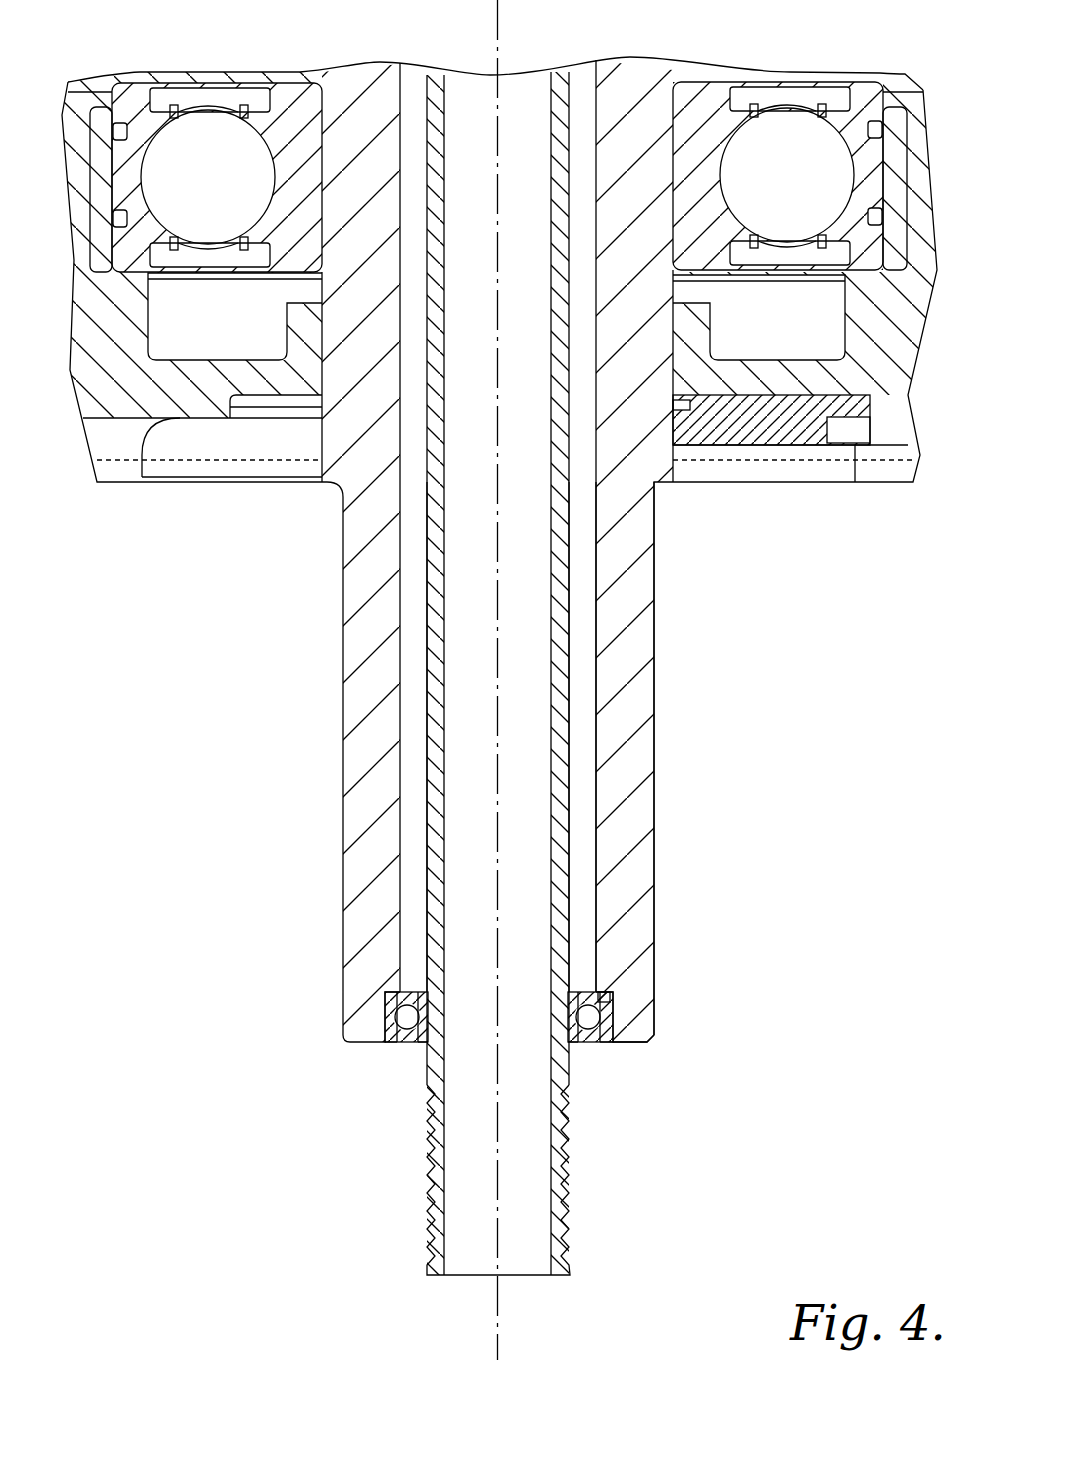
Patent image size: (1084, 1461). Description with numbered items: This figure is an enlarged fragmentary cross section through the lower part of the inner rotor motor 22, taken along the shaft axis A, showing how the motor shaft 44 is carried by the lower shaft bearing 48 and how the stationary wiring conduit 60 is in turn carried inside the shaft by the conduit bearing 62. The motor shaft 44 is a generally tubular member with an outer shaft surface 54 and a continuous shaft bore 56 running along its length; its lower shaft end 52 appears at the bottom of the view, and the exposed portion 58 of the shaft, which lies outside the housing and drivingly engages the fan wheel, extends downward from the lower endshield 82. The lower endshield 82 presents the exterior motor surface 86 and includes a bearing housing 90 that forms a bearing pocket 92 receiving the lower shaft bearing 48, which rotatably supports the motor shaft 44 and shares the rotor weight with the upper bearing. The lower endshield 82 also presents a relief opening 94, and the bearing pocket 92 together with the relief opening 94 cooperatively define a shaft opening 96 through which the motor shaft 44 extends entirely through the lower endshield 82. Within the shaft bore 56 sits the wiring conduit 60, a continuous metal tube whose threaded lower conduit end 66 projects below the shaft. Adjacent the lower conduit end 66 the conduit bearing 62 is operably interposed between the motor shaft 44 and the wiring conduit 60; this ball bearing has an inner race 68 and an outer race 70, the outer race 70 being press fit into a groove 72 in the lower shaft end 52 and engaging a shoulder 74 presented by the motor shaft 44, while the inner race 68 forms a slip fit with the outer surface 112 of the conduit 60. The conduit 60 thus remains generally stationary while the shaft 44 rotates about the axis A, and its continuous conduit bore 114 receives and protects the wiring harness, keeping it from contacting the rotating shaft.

The shaft axis A is at (500, 40).
The motor 22 is at (878, 470).
The motor shaft 44 is at (642, 87).
The lower shaft bearing 48 is at (858, 100).
The lower shaft end 52 is at (640, 1043).
The outer shaft surface 54 is at (655, 785).
The shaft bore 56 is at (606, 630).
The exposed portion 58 is at (348, 633).
The wiring conduit 60 is at (440, 520).
The conduit bearing 62 is at (390, 1010).
The lower conduit end 66 is at (555, 1275).
The inner race 68 is at (425, 1042).
The outer race 70 is at (388, 1040).
The groove 72 is at (610, 1017).
The shoulder 74 is at (602, 997).
The lower endshield 82 is at (110, 400).
The exterior motor surface 86 is at (125, 485).
The bearing housing 90 is at (75, 123).
The bearing pocket 92 is at (285, 262).
The relief opening 94 is at (680, 334).
The shaft opening 96 is at (668, 380).
The outer surface 112 is at (430, 707).
The conduit bore 114 is at (592, 845).